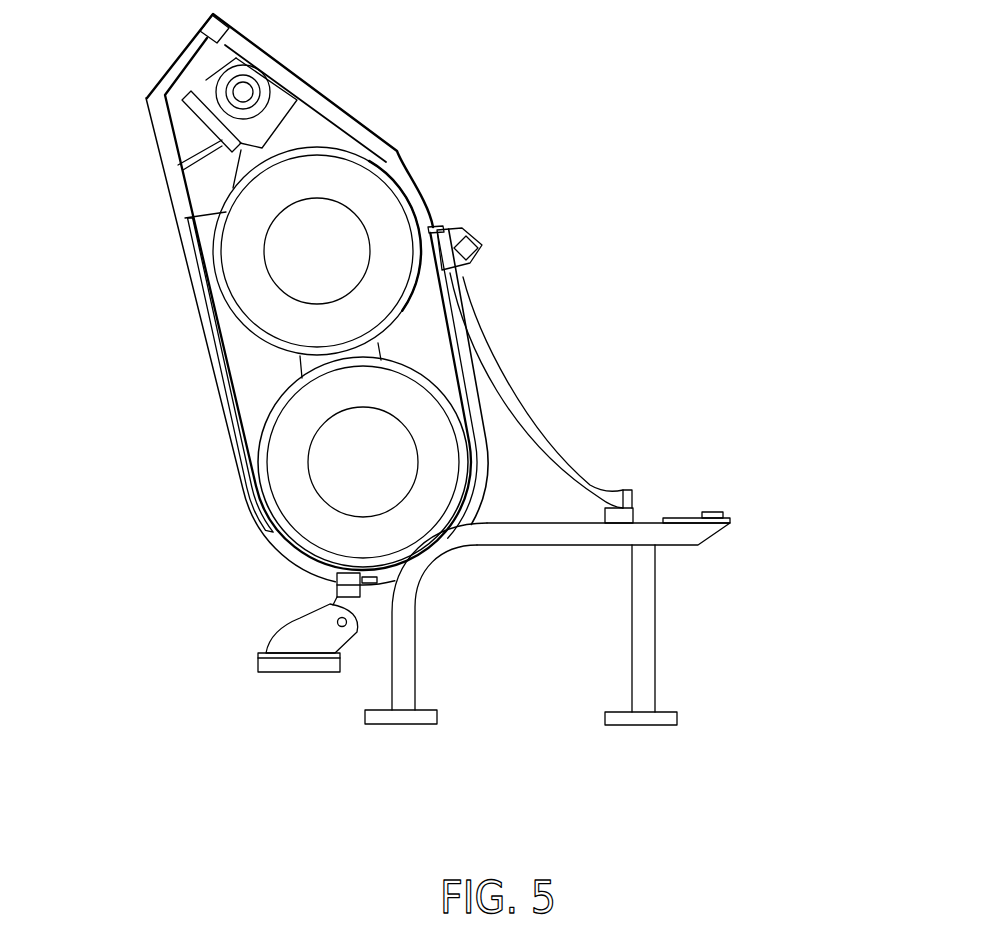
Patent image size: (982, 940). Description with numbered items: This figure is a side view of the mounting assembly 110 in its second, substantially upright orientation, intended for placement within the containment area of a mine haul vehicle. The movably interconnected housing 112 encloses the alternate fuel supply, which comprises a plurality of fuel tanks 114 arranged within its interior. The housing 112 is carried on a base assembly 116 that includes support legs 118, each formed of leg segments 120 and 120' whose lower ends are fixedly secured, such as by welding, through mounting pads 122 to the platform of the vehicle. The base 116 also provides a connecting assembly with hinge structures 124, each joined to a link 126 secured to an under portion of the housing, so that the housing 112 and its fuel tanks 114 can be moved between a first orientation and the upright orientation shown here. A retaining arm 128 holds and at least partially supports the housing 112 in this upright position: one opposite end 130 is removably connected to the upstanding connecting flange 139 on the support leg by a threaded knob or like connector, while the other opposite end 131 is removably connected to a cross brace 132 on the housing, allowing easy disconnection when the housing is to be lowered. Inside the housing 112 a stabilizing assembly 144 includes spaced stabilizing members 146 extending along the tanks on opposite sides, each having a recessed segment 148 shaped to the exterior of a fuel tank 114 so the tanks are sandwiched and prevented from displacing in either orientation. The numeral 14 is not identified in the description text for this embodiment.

The mounting assembly 110 is at (690, 322).
The housing 112 is at (124, 298).
The fuel tank 114 is at (383, 172).
The base assembly 116 is at (780, 522).
The support leg 118 is at (718, 585).
The leg segment 120 is at (477, 616).
The leg segment 120' is at (710, 641).
The mounting pad 122 is at (428, 725).
The hinge structure 124 is at (278, 609).
The link 126 is at (362, 630).
The retaining arm 128 is at (535, 412).
The opposite end 130 is at (634, 512).
The opposite end 131 is at (450, 273).
The cross brace 132 is at (487, 237).
The connecting flange 139 is at (637, 518).
The stabilizing assembly 144 is at (316, 139).
The stabilizing member 146 is at (335, 128).
The recessed segment 148 is at (433, 387).
The belt 14 is at (488, 497).